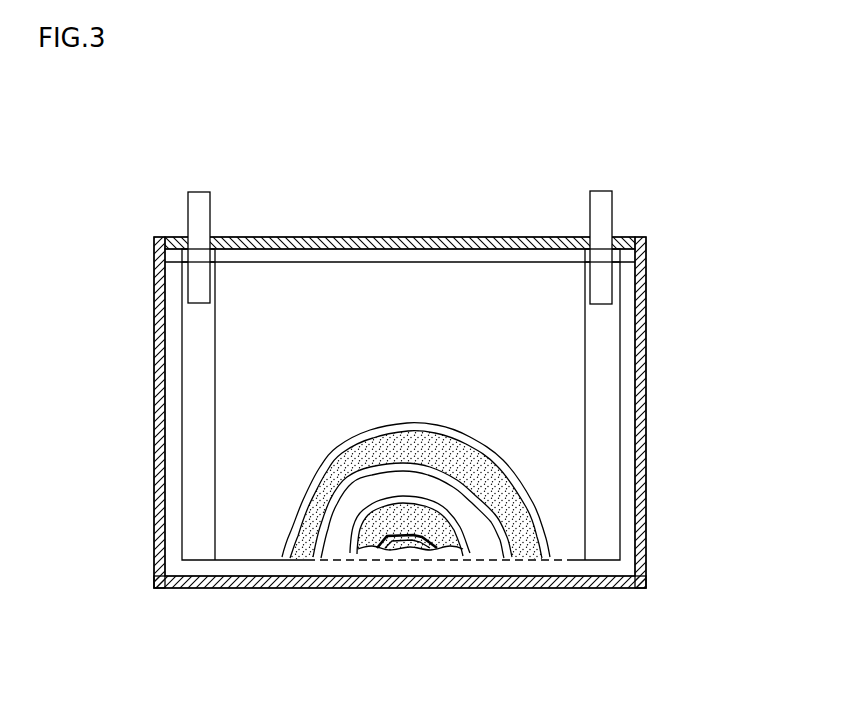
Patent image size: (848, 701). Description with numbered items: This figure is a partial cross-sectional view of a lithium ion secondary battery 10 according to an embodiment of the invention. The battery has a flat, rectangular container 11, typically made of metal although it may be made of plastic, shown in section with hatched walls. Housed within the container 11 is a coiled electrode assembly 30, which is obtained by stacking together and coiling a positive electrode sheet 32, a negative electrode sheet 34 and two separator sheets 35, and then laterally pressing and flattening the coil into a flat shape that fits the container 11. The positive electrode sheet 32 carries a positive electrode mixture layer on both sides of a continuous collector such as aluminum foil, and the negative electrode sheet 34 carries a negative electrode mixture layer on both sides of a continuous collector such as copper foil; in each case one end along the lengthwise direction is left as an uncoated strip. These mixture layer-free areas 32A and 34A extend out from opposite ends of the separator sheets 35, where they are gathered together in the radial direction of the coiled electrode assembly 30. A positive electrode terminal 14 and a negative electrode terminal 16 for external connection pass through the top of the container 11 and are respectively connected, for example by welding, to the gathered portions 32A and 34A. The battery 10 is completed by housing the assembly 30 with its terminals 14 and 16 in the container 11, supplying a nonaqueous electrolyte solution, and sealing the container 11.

The lithium ion secondary battery 10 is at (656, 121).
The container 11 is at (647, 480).
The positive electrode terminal 14 is at (211, 206).
The negative electrode terminal 16 is at (613, 203).
The coiled electrode assembly 30 is at (474, 273).
The positive electrode sheet 32 is at (492, 513).
The mixture layer-free area of positive electrode sheet 32A is at (195, 403).
The negative electrode sheet 34 is at (420, 538).
The mixture layer-free area of negative electrode sheet 34A is at (605, 403).
The separator sheets 35 is at (337, 543).